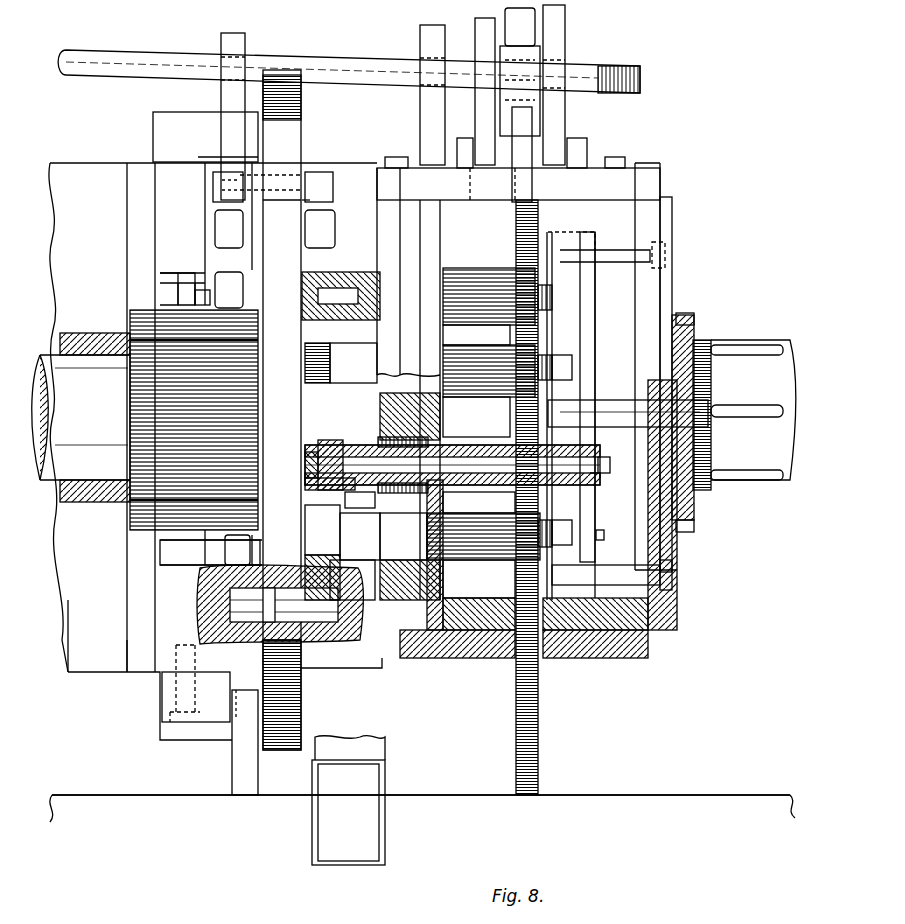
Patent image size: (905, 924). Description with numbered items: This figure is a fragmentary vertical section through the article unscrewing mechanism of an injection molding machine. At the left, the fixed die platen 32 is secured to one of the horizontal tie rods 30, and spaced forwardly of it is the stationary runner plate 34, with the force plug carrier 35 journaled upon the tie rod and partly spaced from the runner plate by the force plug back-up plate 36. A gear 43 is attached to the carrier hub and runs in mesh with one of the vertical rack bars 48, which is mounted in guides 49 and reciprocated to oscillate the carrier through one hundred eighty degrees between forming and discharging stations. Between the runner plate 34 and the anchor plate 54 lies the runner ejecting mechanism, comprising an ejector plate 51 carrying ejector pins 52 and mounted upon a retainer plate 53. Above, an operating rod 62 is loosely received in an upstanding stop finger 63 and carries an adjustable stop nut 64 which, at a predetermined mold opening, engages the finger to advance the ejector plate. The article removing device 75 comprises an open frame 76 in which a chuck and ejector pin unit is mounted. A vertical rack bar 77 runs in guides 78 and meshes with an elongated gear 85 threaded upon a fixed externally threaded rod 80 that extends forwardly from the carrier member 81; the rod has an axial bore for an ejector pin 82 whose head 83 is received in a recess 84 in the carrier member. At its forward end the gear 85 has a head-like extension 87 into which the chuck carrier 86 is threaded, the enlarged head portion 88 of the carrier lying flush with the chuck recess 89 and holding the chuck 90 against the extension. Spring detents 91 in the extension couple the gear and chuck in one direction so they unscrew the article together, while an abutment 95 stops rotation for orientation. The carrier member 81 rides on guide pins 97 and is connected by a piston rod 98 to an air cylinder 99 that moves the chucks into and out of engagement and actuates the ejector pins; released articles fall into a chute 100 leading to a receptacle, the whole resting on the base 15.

The floor / base 15 is at (715, 768).
The horizontal tie rods 30 is at (40, 470).
The fixed die platen 32 is at (70, 600).
The stationary runner plate 34 is at (222, 555).
The force plug carrier 35 is at (304, 708).
The force plug back-up plate 36 is at (262, 553).
The gear 43 is at (150, 330).
The vertical rack bars 48 is at (240, 42).
The guides 49 is at (190, 120).
The ejector plate 51 is at (178, 285).
The ejector pins 52 is at (197, 285).
The retainer plate 53 is at (160, 285).
The anchor plate 54 is at (146, 660).
The operating rods 62 is at (150, 48).
The stop fingers 63 is at (422, 35).
The adjustable stop nuts 64 is at (568, 48).
The article removing device 75 is at (712, 270).
The open frame 76 is at (655, 202).
The vertical rack bars 77 is at (540, 712).
The guides 78 is at (508, 500).
The externally threaded rod 80 is at (562, 310).
The carrier member 81 is at (601, 397).
The ejector pin 82 is at (356, 445).
The head 83 is at (605, 460).
The recess 84 is at (602, 476).
The elongated gear 85 is at (478, 350).
The chuck carrier 86 is at (338, 445).
The head-like extension 87 is at (412, 532).
The enlarged head portion 88 is at (318, 445).
The chuck recess 89 is at (305, 462).
The chuck 90 is at (348, 272).
The spring detents 91 is at (360, 499).
The abutment 95 is at (308, 488).
The guide pins 97 is at (628, 250).
The piston rod 98 is at (618, 400).
The air cylinder 99 is at (752, 364).
The chute 100 is at (370, 770).